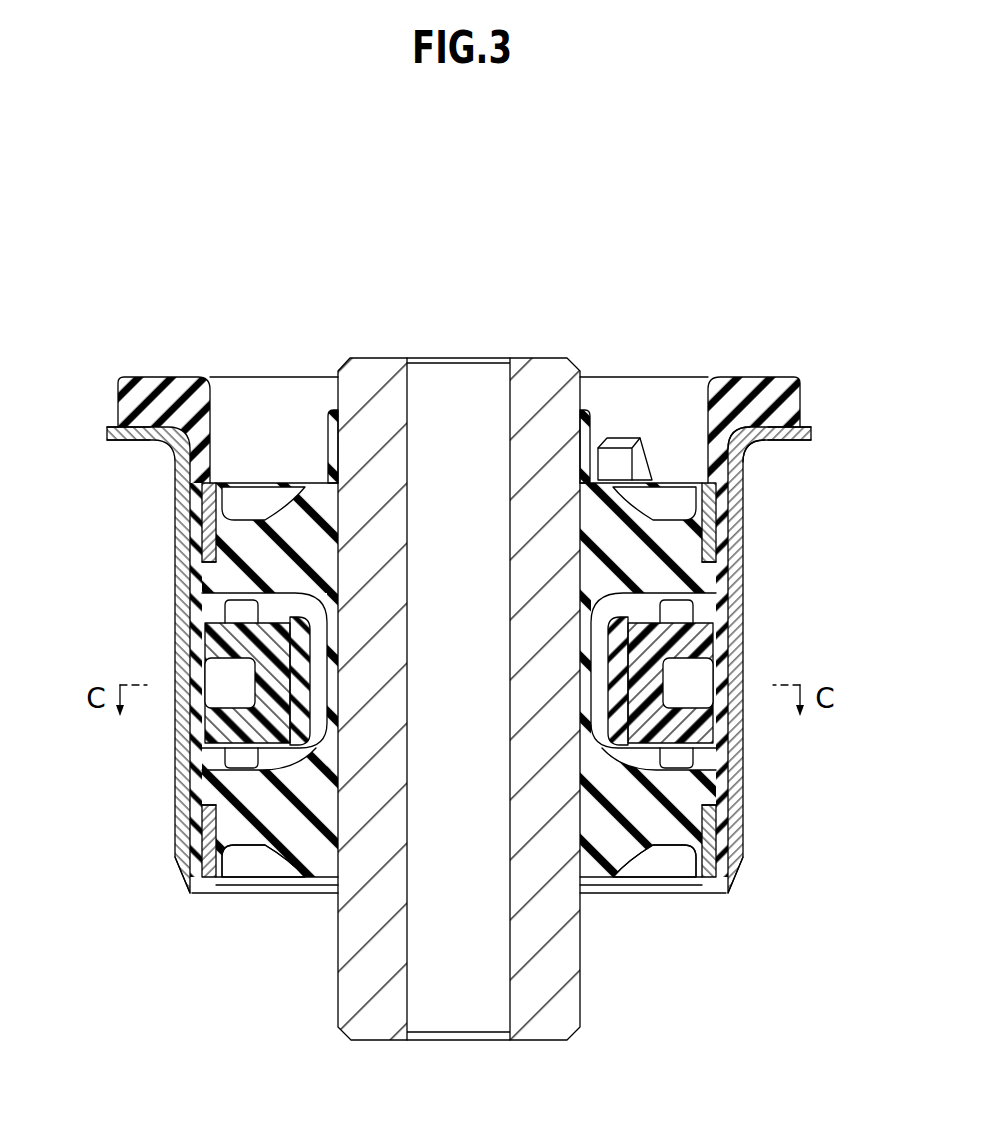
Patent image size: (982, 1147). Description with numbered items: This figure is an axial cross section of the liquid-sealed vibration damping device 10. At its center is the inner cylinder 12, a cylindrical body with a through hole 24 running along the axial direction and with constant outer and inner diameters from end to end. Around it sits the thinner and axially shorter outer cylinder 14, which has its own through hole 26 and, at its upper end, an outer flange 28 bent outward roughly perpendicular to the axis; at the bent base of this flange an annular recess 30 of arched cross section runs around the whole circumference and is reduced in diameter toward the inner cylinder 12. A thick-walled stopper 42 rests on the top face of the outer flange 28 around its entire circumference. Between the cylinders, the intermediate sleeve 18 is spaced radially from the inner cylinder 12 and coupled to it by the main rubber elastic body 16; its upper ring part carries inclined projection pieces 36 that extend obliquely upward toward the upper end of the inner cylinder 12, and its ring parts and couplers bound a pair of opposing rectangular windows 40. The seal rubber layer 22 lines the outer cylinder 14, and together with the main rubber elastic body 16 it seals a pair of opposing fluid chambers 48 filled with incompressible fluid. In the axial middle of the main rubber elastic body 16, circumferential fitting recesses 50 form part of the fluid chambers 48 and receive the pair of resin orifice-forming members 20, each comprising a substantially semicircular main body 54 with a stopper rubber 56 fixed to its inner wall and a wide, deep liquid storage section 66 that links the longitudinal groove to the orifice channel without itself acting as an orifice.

The liquid-sealed vibration damping device 10 is at (284, 245).
The inner cylinder 12 is at (372, 365).
The outer cylinder 14 is at (738, 805).
The main rubber elastic body 16 is at (613, 845).
The intermediate sleeve 18 is at (208, 505).
The orifice-forming member 20 is at (213, 750).
The seal rubber layer 22 is at (195, 540).
The through hole 24 is at (488, 1033).
The through hole 26 is at (199, 882).
The outer flange 28 is at (812, 433).
The annular recess 30 is at (740, 446).
The inclined projection piece 36 is at (598, 447).
The window 40 is at (205, 575).
The stopper 42 is at (805, 390).
The fluid chamber 48 is at (250, 825).
The fitting recess 50 is at (248, 603).
The main body 54 is at (215, 636).
The stopper rubber 56 is at (286, 762).
The liquid storage section 66 is at (233, 692).